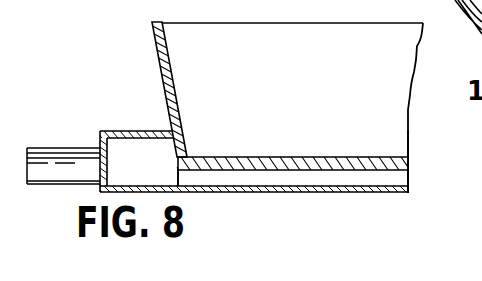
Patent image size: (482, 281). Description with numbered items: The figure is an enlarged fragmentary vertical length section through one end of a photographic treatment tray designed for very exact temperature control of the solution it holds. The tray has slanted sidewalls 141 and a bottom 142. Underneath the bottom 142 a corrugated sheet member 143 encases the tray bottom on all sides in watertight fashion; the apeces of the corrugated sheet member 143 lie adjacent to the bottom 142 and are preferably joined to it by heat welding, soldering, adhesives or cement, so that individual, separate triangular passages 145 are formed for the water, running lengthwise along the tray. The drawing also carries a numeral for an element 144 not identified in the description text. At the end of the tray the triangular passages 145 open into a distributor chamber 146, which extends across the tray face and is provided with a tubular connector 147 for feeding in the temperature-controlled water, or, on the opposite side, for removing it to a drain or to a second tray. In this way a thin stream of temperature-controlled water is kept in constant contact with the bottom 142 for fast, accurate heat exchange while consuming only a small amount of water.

The slanted sidewalls 141 is at (158, 52).
The bottom 142 is at (409, 152).
The corrugated sheet member 143 is at (255, 178).
The horizontal plate 144 is at (270, 171).
The triangular passages 145 is at (318, 180).
The distributor chamber 146 is at (147, 175).
The tubular connectors 147 is at (58, 143).